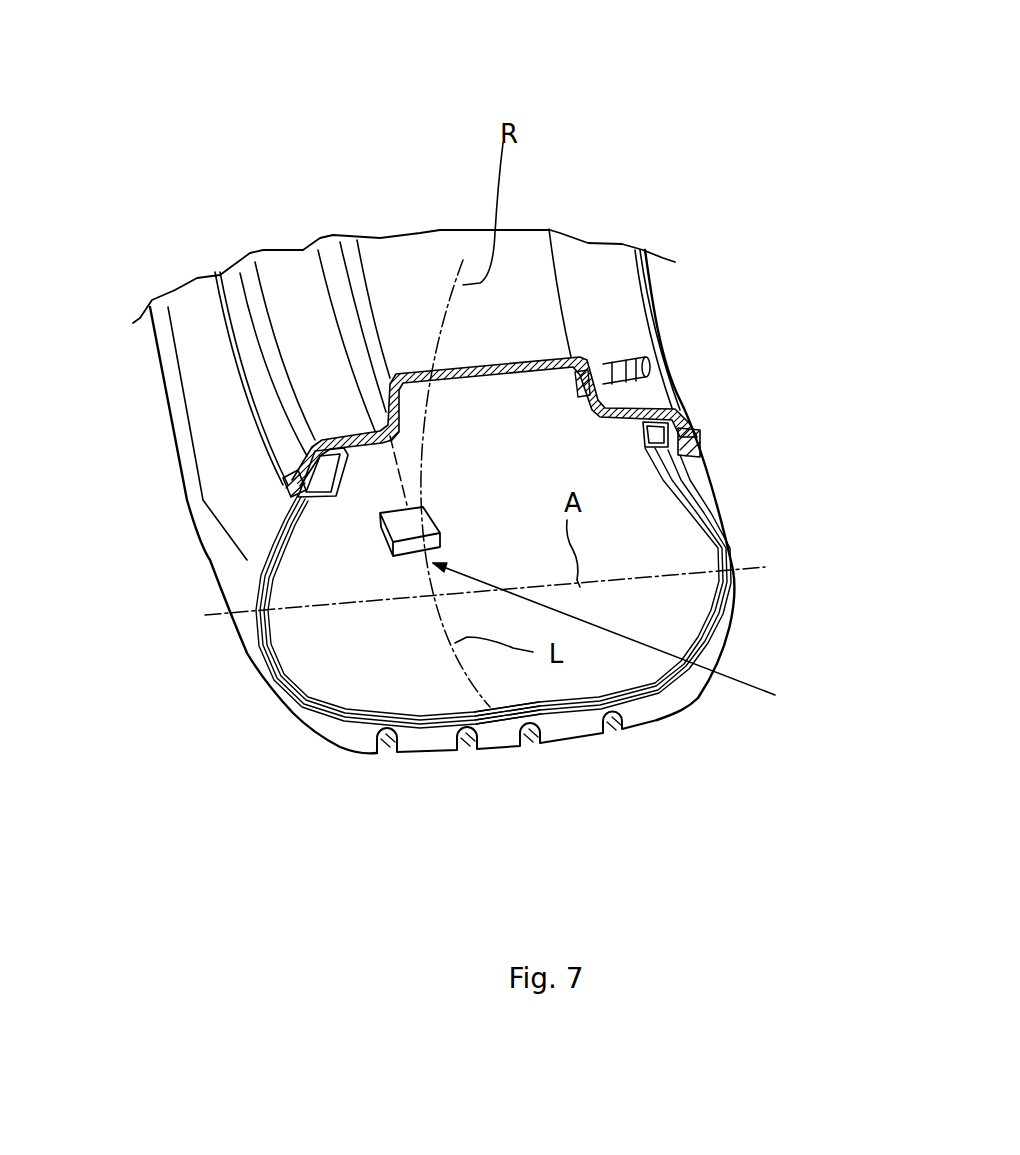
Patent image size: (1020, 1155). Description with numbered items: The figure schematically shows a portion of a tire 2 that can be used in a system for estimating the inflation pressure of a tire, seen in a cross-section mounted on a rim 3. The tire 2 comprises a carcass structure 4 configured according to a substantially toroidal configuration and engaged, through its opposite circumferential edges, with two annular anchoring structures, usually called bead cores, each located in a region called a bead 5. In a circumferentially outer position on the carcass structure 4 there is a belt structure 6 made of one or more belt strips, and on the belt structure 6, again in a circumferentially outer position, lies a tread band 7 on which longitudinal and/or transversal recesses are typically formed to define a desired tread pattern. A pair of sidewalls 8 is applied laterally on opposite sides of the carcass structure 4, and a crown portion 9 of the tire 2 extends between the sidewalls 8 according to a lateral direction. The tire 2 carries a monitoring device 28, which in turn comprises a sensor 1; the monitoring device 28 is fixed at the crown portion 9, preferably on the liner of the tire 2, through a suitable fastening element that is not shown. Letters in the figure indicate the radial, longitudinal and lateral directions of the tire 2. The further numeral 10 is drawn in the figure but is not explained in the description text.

The sensor 1 is at (444, 530).
The tire 2 is at (475, 449).
The rim 3 is at (410, 267).
The carcass structure 4 is at (717, 528).
The bead 5 is at (313, 452).
The belt structure 6 is at (493, 727).
The tread band 7 is at (578, 750).
The sidewall 8 is at (253, 580).
The crown portion 9 is at (615, 640).
The bead core 10 is at (290, 478).
The monitoring device 28 is at (459, 512).